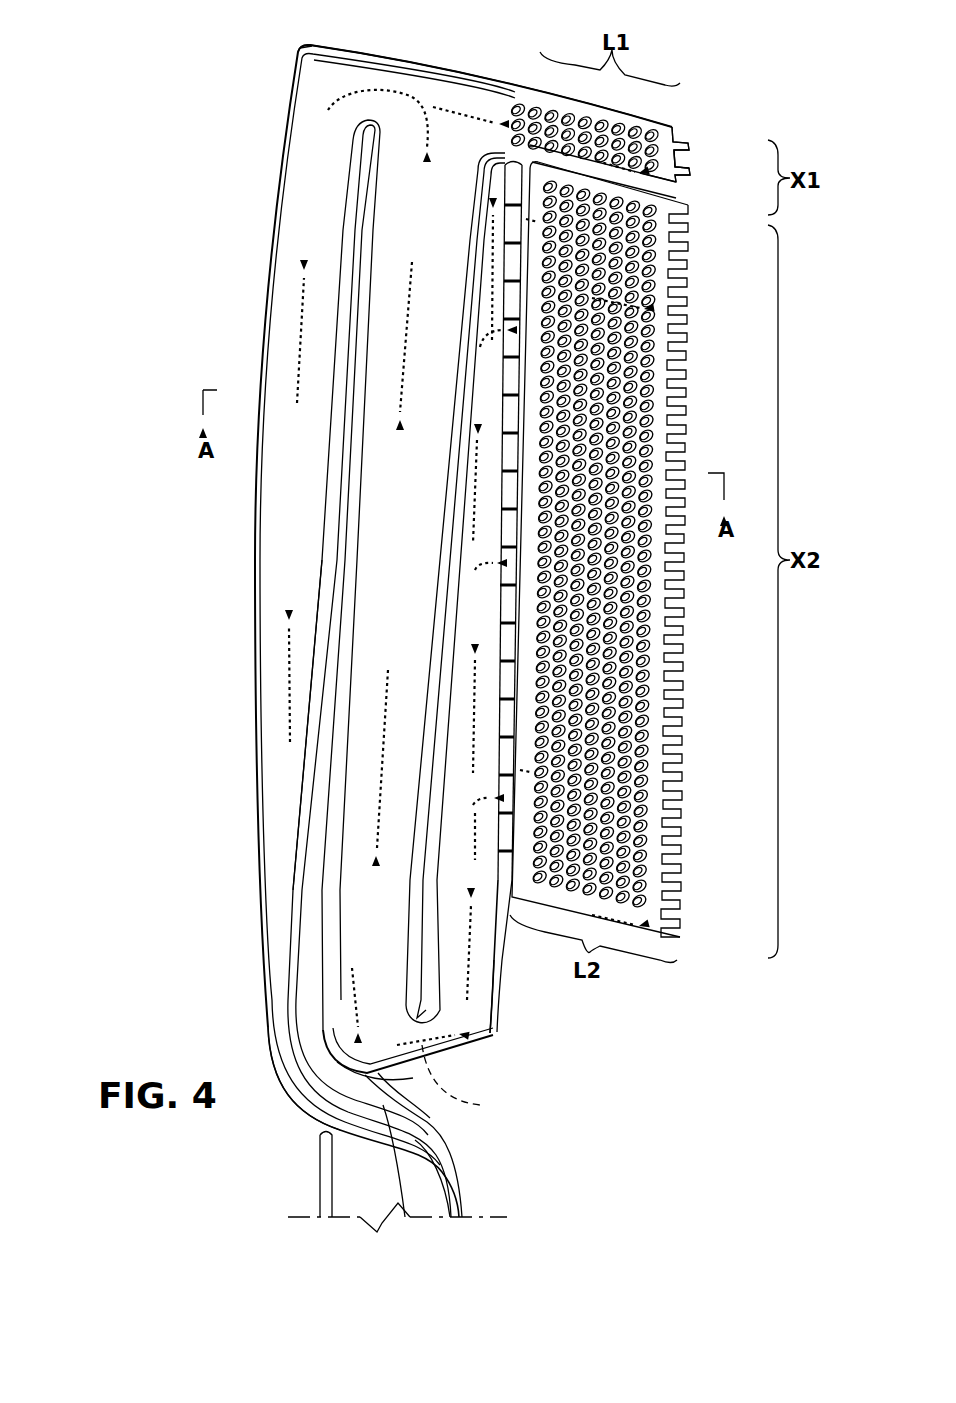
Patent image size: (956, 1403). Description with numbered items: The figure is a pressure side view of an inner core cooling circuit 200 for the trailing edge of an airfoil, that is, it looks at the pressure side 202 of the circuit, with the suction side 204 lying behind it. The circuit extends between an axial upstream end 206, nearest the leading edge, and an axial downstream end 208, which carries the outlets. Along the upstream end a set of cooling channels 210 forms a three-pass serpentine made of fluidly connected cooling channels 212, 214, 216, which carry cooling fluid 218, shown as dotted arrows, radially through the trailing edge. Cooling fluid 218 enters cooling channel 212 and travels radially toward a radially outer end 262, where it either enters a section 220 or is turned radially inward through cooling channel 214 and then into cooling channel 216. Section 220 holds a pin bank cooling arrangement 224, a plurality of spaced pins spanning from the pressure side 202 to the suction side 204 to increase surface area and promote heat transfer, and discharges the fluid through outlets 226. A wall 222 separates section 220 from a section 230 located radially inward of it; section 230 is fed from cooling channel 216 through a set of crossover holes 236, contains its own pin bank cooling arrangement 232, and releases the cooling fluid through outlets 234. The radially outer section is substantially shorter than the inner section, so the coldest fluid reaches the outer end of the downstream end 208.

The cooling circuit 200 is at (182, 118).
The pressure side 202 is at (310, 146).
The suction side 204 is at (470, 70).
The axial upstream end 206 is at (337, 25).
The axial downstream end 208 is at (658, 46).
The set of cooling channels 210 is at (282, 1116).
The cooling channel 212 is at (284, 1043).
The cooling channel 214 is at (350, 952).
The cooling channel 216 is at (497, 960).
The cooling fluid 218 is at (473, 1082).
The section 220 is at (682, 114).
The wall 222 is at (674, 188).
The pin bank cooling arrangement 224 is at (580, 133).
The outlets 226 is at (690, 152).
The section 230 is at (643, 549).
The pin bank cooling arrangement 232 is at (607, 412).
The outlets 234 is at (682, 657).
The set of crossover holes 236 is at (582, 703).
The radially outer end 262 is at (306, 52).